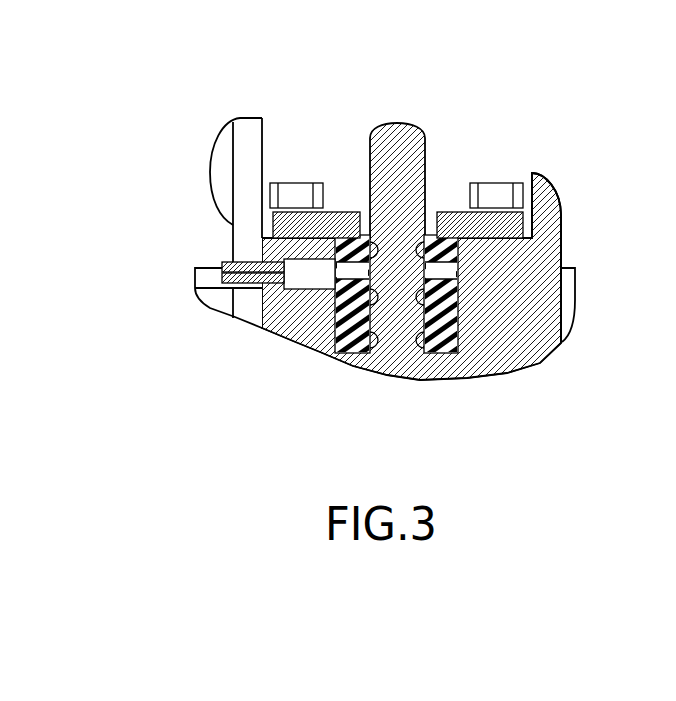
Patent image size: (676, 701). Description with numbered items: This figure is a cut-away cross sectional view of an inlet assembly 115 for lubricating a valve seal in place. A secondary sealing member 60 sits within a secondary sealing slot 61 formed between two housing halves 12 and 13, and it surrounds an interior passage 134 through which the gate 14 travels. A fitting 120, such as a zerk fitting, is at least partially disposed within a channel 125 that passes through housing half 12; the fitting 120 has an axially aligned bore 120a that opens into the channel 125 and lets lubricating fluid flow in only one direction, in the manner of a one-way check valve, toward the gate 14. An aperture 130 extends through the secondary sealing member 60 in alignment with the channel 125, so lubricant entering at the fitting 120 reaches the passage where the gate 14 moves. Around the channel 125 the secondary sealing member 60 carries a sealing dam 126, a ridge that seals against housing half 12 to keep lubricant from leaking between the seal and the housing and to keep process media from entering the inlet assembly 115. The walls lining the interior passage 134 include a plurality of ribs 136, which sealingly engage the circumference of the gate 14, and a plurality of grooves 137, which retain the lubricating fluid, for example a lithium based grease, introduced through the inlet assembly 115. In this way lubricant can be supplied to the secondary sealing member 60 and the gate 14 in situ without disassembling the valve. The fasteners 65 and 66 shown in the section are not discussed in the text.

The housing half 12 is at (313, 335).
The housing half 13 is at (522, 343).
The gate 14 is at (413, 140).
The secondary sealing member 60 is at (512, 222).
The secondary sealing slot 61 is at (340, 350).
The bolt 65 is at (335, 233).
The bolt 66 is at (498, 190).
The inlet assembly 115 is at (172, 272).
The fitting 120 is at (225, 262).
The axially aligned bore 120a is at (232, 321).
The channel 125 is at (245, 290).
The sealing dam 126 is at (333, 247).
The aperture 130 is at (292, 340).
The interior passage 134 is at (396, 238).
The ribs 136 is at (356, 345).
The grooves 137 is at (417, 245).